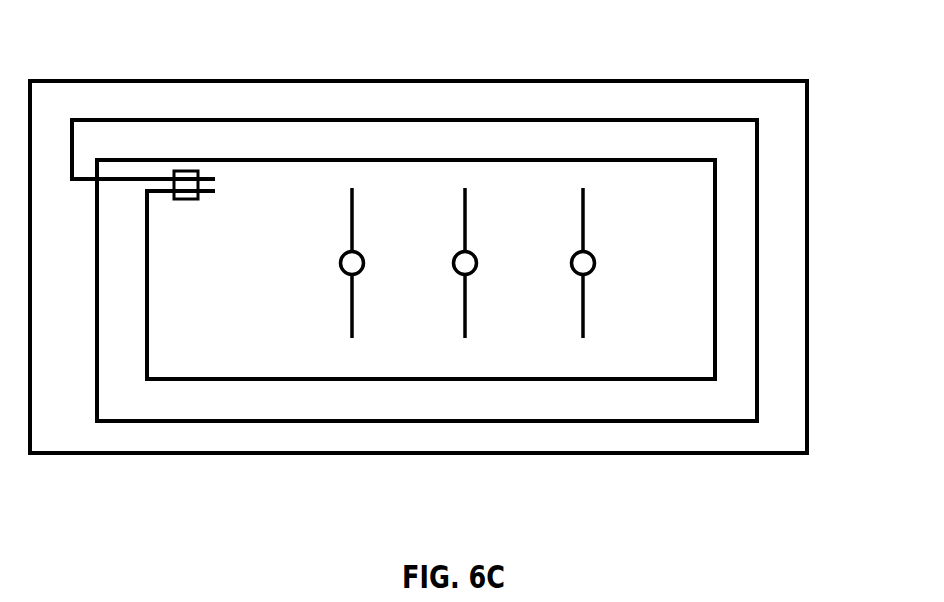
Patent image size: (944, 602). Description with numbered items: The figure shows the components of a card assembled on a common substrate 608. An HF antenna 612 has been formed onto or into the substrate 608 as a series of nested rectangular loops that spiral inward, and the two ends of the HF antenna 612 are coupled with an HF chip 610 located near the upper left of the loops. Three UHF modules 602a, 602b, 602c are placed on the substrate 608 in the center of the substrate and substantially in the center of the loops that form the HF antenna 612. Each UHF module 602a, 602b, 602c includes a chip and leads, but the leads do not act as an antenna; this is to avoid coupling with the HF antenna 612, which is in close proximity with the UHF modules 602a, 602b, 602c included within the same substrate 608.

The substrate 608 is at (323, 81).
The HF antenna 612 is at (758, 227).
The HF chip 610 is at (186, 199).
The UHF module 602a is at (352, 225).
The UHF module 602b is at (465, 225).
The UHF module 602c is at (583, 225).